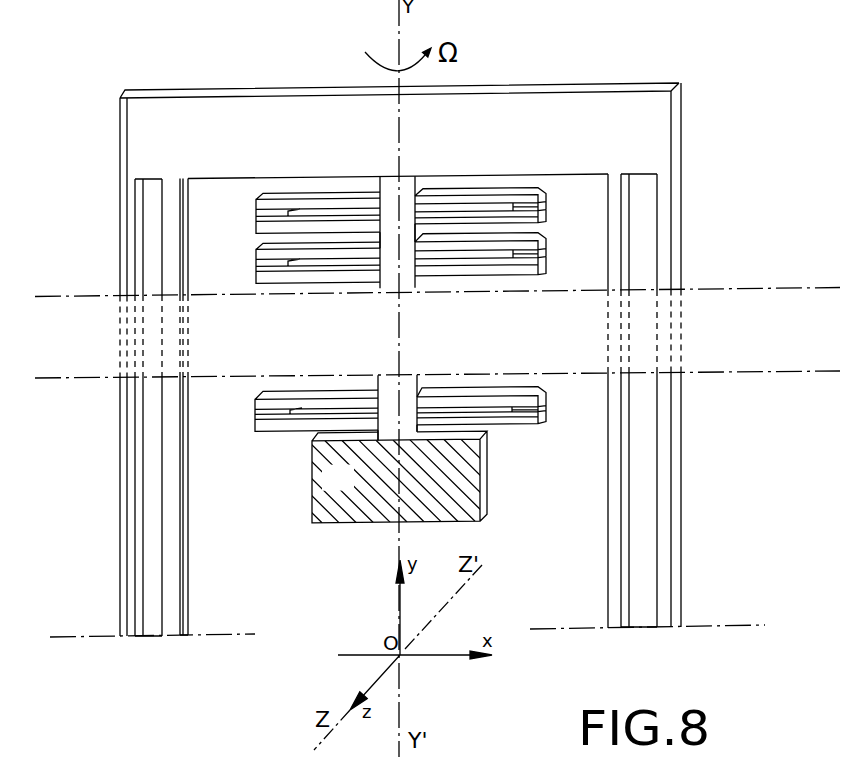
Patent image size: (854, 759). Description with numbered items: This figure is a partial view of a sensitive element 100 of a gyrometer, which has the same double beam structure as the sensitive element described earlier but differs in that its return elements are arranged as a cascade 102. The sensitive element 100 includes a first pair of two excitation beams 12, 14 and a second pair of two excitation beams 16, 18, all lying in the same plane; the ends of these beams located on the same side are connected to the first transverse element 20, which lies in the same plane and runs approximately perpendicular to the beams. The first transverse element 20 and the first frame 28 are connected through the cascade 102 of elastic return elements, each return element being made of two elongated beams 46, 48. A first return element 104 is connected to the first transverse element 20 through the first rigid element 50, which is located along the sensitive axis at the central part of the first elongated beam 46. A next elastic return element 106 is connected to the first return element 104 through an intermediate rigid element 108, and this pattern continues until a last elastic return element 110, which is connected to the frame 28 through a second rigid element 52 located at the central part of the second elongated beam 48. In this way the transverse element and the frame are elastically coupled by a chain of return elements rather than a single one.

The sensitive element 100 is at (564, 72).
The first transverse element 20 is at (265, 115).
The excitation beam 18 is at (128, 247).
The excitation beam 16 is at (172, 268).
The excitation beam 14 is at (662, 267).
The excitation beam 12 is at (612, 270).
The cascade of return elements 102 is at (221, 430).
The first return element 104 is at (238, 221).
The next elastic return element 106 is at (241, 272).
The intermediate rigid element 108 is at (403, 237).
The last elastic return element 110 is at (228, 410).
The first rigid element 50 is at (407, 185).
The first elongated beam 46 is at (497, 207).
The second elongated beam 48 is at (530, 224).
The second rigid element 52 is at (390, 428).
The first frame 28 is at (333, 508).